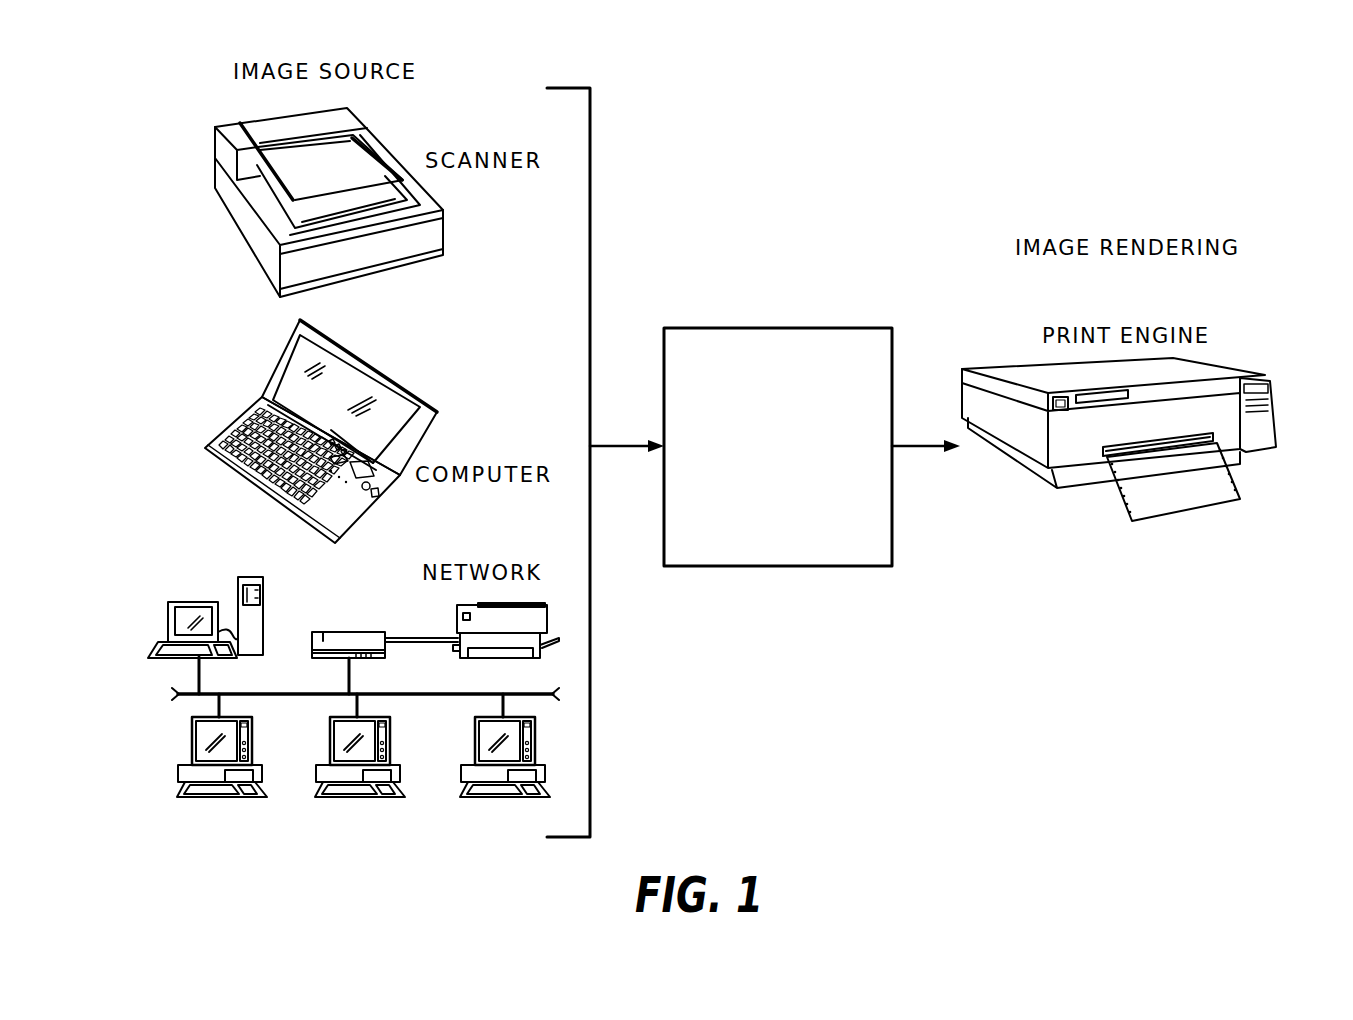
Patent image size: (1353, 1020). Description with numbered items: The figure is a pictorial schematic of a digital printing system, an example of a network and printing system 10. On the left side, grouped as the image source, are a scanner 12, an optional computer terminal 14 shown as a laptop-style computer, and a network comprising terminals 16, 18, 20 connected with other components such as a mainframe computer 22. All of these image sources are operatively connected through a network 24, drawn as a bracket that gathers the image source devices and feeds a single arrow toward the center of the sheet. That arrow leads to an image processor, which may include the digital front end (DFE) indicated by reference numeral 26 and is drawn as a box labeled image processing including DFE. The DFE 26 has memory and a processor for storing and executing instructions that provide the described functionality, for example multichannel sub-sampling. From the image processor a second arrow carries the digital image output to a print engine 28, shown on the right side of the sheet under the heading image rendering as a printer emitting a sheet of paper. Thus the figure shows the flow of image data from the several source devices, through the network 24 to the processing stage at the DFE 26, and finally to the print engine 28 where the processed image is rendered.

The network and printing system 10 is at (900, 86).
The scanner 12 is at (258, 258).
The computer terminal 14 is at (262, 383).
The terminal 16 is at (190, 766).
The terminal 18 is at (340, 797).
The terminal 20 is at (487, 797).
The mainframe computer 22 is at (193, 602).
The network 24 is at (590, 262).
The digital front end (DFE) 26 is at (776, 328).
The print engine 28 is at (1012, 368).